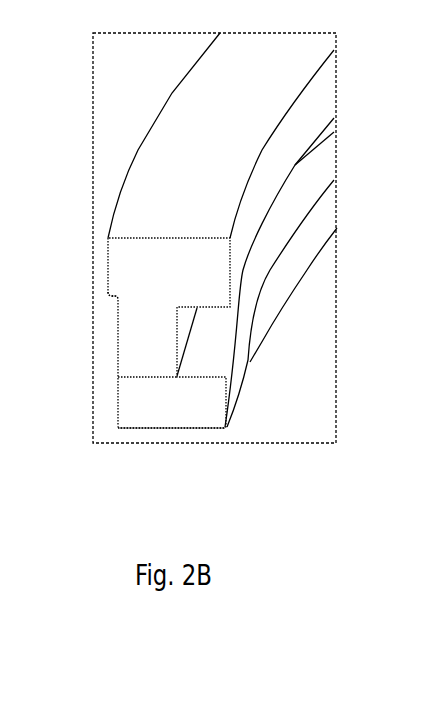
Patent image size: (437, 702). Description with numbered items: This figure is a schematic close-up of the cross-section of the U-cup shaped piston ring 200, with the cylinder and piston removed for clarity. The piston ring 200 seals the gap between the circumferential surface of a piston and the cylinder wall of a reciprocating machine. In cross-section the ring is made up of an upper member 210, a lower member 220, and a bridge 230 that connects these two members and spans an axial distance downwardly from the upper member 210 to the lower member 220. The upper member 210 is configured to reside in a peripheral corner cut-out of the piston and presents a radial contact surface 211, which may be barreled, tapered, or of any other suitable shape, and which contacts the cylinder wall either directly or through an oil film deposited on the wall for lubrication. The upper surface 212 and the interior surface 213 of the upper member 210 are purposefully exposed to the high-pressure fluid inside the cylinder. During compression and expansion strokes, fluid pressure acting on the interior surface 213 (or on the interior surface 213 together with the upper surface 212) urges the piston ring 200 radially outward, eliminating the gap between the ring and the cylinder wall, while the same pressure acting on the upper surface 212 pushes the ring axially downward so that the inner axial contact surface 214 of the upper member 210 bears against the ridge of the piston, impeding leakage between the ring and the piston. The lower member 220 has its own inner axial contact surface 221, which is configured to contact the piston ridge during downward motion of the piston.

The U-cup piston ring 200 is at (213, 158).
The upper member 210 is at (198, 275).
The radial contact surface 211 is at (107, 269).
The upper surface 212 is at (228, 93).
The interior surface 213 is at (272, 178).
The inner axial contact surface 214 is at (203, 308).
The lower member 220 is at (193, 416).
The inner axial contact surface 221 is at (198, 357).
The bridge 230 is at (150, 344).